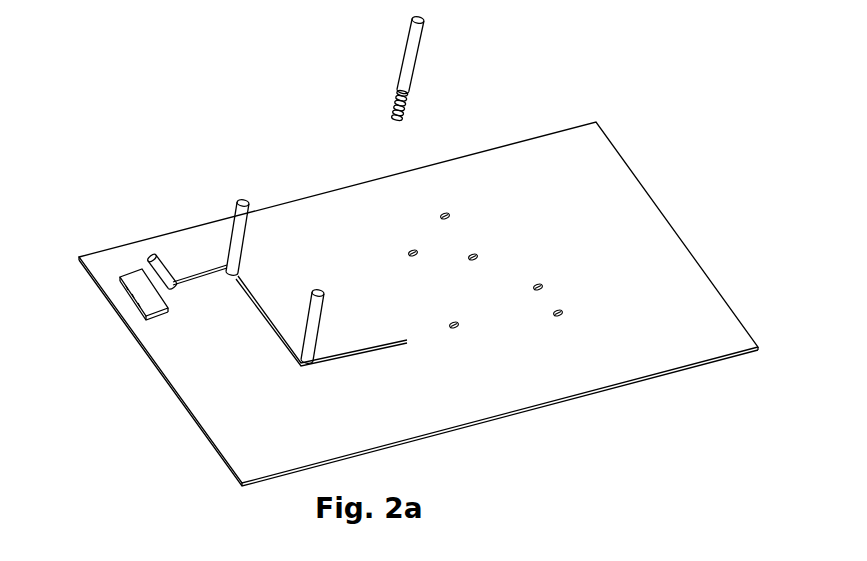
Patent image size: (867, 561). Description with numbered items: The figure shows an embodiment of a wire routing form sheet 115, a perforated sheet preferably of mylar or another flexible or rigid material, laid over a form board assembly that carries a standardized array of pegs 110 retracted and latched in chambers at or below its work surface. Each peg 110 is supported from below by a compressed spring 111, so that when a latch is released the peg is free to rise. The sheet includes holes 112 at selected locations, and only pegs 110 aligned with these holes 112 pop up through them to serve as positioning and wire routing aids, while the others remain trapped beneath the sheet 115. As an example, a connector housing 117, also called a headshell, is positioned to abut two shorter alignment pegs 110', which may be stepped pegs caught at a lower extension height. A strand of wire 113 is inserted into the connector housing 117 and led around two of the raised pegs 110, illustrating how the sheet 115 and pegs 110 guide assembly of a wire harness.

The peg 110 is at (296, 190).
The shorter alignment peg 110' is at (132, 245).
The compressed spring 111 is at (397, 104).
The hole 112 is at (475, 255).
The strand of wire 113 is at (270, 322).
The wire routing form sheet 115 is at (362, 181).
The connector housing 117 is at (125, 272).